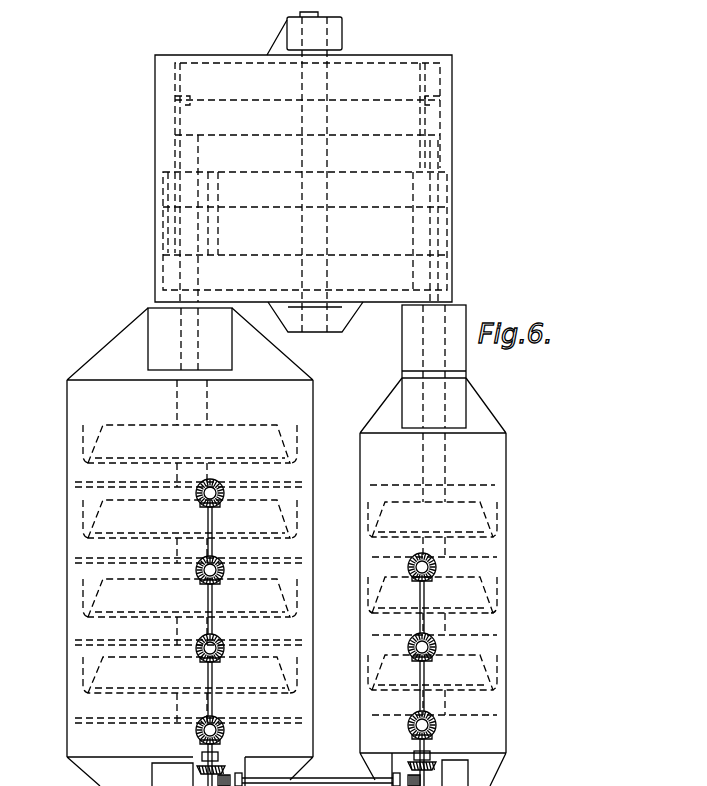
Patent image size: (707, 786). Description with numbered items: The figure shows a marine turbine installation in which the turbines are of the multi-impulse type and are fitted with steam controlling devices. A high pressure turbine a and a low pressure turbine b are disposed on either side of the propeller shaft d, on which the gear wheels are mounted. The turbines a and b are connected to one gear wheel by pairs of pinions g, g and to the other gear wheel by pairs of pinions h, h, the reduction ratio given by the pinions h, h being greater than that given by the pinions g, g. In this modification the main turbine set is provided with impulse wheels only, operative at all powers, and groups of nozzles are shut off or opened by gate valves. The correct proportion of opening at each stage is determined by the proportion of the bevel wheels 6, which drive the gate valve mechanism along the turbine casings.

The high pressure turbine a is at (370, 588).
The low pressure turbine b is at (80, 578).
The propeller shaft d is at (327, 42).
The pinions h is at (182, 128).
The pinions g is at (173, 272).
The bevel wheels 6 is at (219, 578).